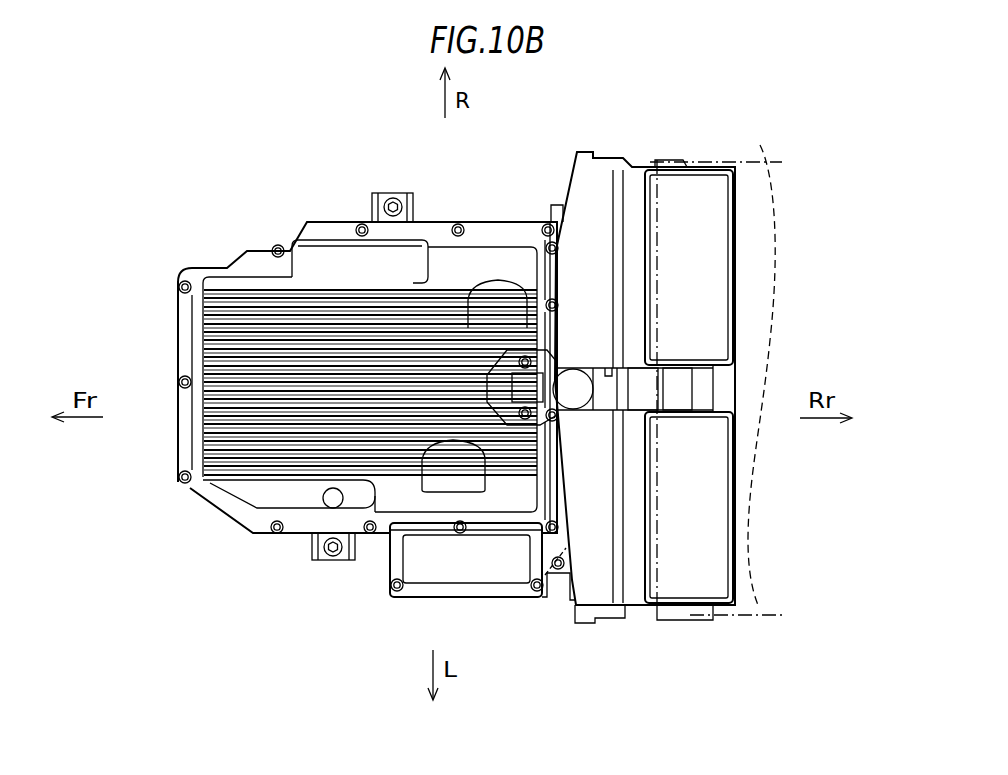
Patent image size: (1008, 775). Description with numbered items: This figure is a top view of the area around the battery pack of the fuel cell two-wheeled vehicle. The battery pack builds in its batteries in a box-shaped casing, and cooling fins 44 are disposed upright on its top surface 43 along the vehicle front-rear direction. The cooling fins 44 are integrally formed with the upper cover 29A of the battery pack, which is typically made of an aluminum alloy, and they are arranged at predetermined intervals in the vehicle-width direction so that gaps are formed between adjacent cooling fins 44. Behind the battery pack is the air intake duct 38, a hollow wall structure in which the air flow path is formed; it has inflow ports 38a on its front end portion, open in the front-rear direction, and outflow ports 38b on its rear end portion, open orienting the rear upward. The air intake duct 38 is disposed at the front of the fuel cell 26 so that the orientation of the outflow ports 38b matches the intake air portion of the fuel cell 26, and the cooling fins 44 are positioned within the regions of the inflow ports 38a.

The top surface 43 is at (452, 270).
The upper cover 29A is at (480, 222).
The inflow port 38a is at (557, 218).
The fuel cell 26 is at (718, 162).
The outflow port 38b is at (712, 281).
The air intake duct 38 is at (600, 548).
The cooling fins 44 is at (160, 295).